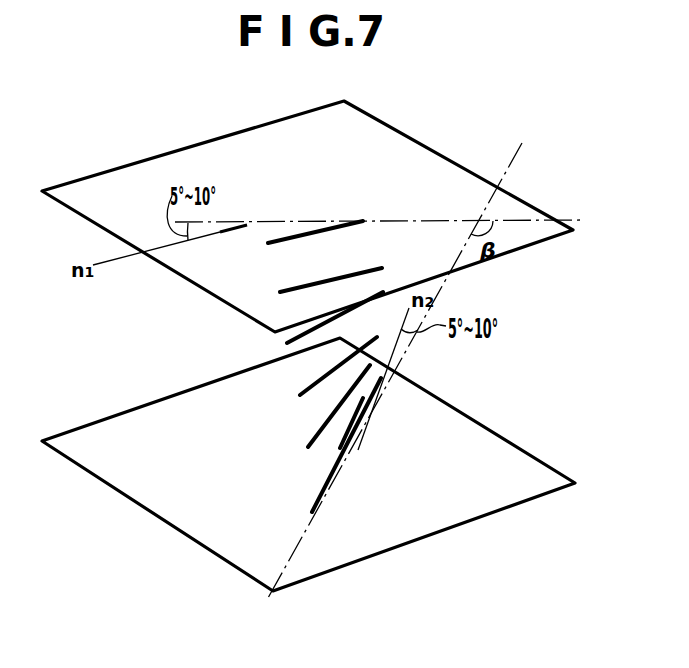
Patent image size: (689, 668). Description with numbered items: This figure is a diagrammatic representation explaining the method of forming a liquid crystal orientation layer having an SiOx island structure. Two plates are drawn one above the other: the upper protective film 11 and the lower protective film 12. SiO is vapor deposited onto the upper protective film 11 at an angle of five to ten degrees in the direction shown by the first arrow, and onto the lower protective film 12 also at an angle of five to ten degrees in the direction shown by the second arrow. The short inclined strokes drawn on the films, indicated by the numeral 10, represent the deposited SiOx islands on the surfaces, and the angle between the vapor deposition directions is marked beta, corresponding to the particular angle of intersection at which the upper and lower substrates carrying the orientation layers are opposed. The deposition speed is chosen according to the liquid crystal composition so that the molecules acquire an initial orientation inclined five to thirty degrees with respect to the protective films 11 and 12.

The grooves (rubbing direction strokes) 10 is at (300, 394).
The upper protective film 11 is at (515, 197).
The lower protective film 12 is at (522, 446).